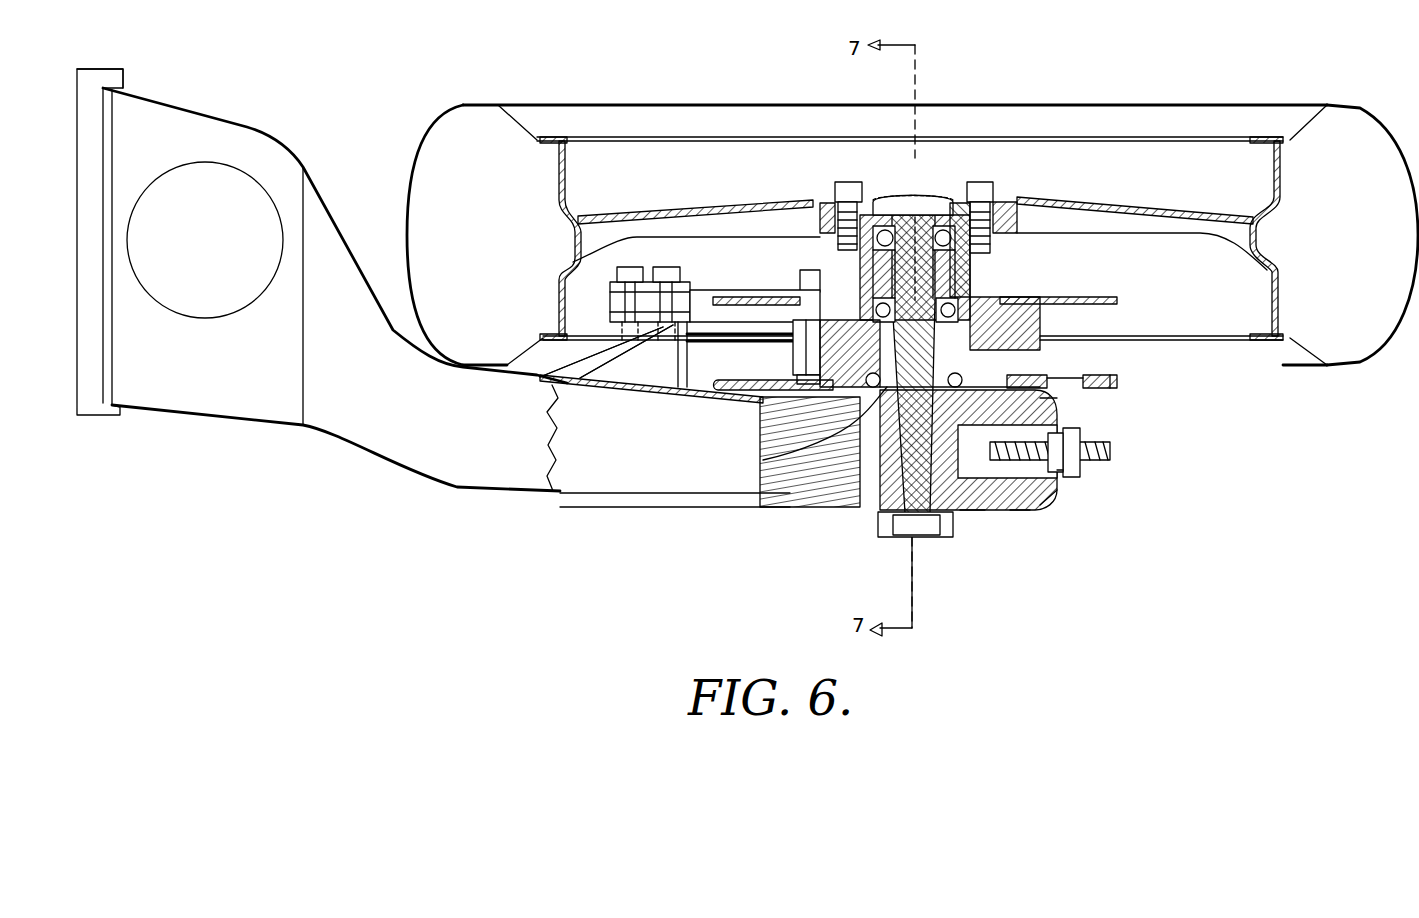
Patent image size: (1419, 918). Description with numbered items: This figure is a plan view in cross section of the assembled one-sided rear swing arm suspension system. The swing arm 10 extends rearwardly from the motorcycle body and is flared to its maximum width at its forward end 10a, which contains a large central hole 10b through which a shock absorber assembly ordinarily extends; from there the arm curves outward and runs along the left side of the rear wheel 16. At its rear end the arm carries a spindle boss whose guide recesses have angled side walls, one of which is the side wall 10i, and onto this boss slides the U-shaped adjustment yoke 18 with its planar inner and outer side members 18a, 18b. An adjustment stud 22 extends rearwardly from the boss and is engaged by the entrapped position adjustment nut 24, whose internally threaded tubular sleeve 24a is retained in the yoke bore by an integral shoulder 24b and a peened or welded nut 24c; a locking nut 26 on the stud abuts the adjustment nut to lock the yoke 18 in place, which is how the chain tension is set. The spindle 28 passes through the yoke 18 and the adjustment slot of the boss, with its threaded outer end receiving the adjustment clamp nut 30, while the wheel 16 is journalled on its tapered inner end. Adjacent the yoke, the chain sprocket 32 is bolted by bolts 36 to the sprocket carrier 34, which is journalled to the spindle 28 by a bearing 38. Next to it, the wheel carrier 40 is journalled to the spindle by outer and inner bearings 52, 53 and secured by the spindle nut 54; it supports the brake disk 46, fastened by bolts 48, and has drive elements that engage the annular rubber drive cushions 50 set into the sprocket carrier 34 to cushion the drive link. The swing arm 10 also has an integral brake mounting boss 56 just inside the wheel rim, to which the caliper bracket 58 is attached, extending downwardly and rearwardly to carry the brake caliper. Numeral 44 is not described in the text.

The swing arm 10 is at (470, 499).
The forward end 10a is at (169, 112).
The central hole 10b is at (244, 180).
The side wall 10i is at (797, 487).
The rear wheel 16 is at (653, 208).
The adjustment yoke 18 is at (986, 523).
The inner side member 18a is at (1057, 398).
The outer side member 18b is at (970, 517).
The adjustment stud 22 is at (1110, 450).
The position adjustment nut 24 is at (1068, 477).
The tubular sleeve 24a is at (1050, 512).
The shoulder 24b is at (1020, 510).
The nut 24c is at (1060, 472).
The locking nut 26 is at (1087, 473).
The spindle 28 is at (763, 462).
The adjustment clamp nut 30 is at (878, 523).
The chain sprocket 32 is at (1117, 390).
The sprocket carrier 34 is at (1113, 378).
The bolts 36 is at (790, 363).
The bearing 38 is at (767, 420).
The wheel carrier 40 is at (820, 250).
The hub bolt 44 is at (820, 187).
The brake disk 46 is at (1113, 290).
The bolts 48 is at (810, 287).
The rubber drive cushions 50 is at (1040, 327).
The outer bearing 52 is at (943, 220).
The inner bearing 53 is at (973, 293).
The spindle nut 54 is at (890, 200).
The brake mounting boss 56 is at (673, 330).
The caliper bracket 58 is at (723, 283).